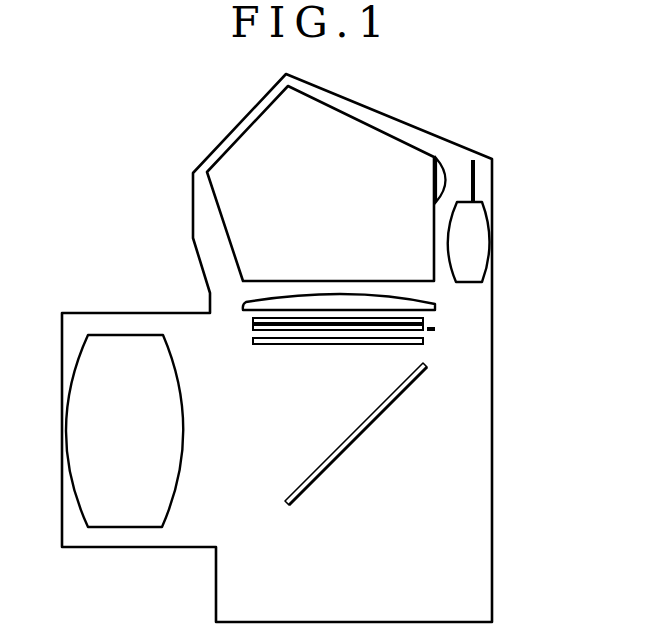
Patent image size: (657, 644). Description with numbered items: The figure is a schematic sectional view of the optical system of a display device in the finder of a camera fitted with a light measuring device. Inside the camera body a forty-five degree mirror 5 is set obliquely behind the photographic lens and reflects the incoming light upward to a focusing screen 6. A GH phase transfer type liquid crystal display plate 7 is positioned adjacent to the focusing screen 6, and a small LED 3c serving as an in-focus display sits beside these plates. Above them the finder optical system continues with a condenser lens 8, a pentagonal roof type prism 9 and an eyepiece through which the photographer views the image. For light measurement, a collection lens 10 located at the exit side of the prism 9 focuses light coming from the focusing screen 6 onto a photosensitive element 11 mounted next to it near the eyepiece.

The pentagonal roof type prism 9 is at (362, 119).
The collection lens 10 is at (443, 160).
The photosensitive element 11 is at (477, 170).
The condenser lens 8 is at (436, 306).
The GH phase transfer type liquid crystal display plate 7 is at (425, 320).
The LED 3c is at (436, 329).
The focusing screen 6 is at (423, 341).
The 45° mirror 5 is at (396, 406).